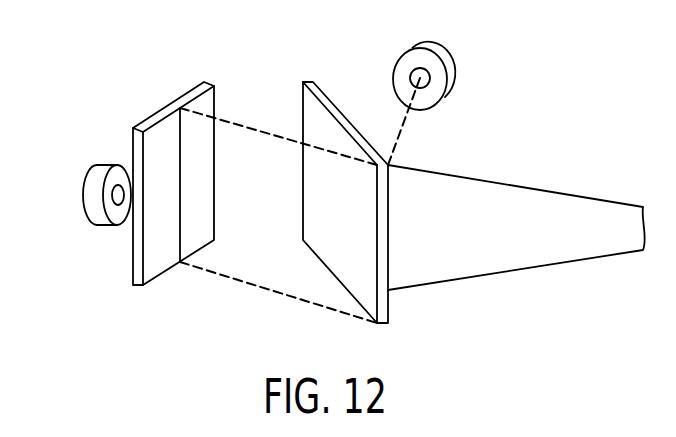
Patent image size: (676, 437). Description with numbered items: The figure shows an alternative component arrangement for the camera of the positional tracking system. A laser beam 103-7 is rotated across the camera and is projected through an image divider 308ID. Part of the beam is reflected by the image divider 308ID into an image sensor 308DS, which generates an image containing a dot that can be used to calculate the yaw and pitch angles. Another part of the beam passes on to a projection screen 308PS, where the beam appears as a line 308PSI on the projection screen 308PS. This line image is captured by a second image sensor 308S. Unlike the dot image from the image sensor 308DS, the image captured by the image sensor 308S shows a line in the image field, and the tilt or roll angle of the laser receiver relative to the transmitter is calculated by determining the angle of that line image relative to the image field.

The image sensor 308S is at (103, 197).
The projection screen 308PS is at (195, 87).
The line 308PSI is at (173, 222).
The image divider 308ID is at (330, 101).
The image sensor 308DS is at (452, 66).
The laser beam 103-7 is at (503, 195).